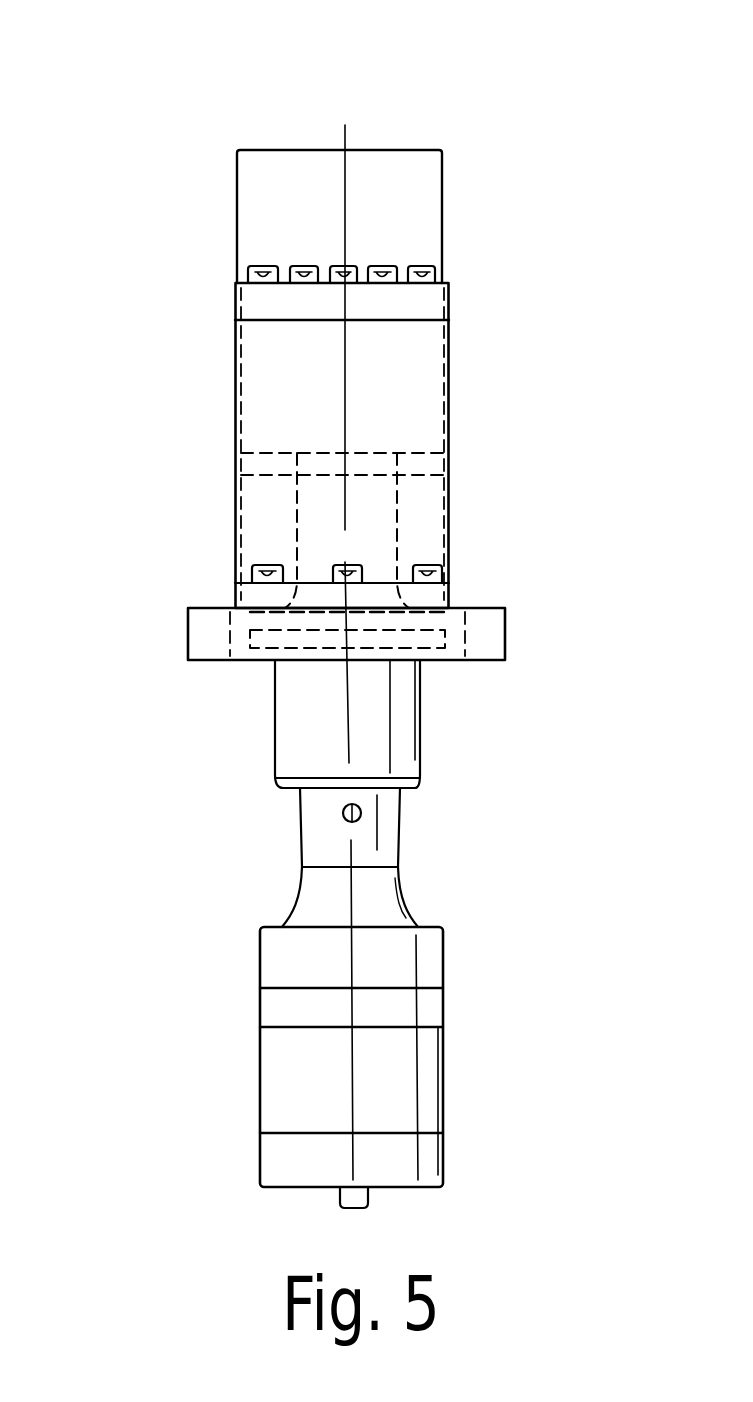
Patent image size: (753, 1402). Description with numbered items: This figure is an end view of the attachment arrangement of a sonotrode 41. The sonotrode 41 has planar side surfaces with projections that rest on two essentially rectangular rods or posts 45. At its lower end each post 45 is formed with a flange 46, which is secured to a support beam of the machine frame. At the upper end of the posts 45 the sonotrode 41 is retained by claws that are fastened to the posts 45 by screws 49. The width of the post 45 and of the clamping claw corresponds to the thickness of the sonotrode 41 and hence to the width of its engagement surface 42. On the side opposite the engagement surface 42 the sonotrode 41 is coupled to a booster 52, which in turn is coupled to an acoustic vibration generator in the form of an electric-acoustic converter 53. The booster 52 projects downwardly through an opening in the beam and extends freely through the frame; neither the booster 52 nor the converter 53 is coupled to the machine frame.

The sonotrode 41 is at (443, 193).
The engagement surface 42 is at (373, 149).
The screws 49 is at (443, 265).
The rod or post 45 is at (430, 508).
The booster 52 is at (308, 535).
The flange 46 is at (438, 598).
The electric-acoustic converter 53 is at (430, 1078).